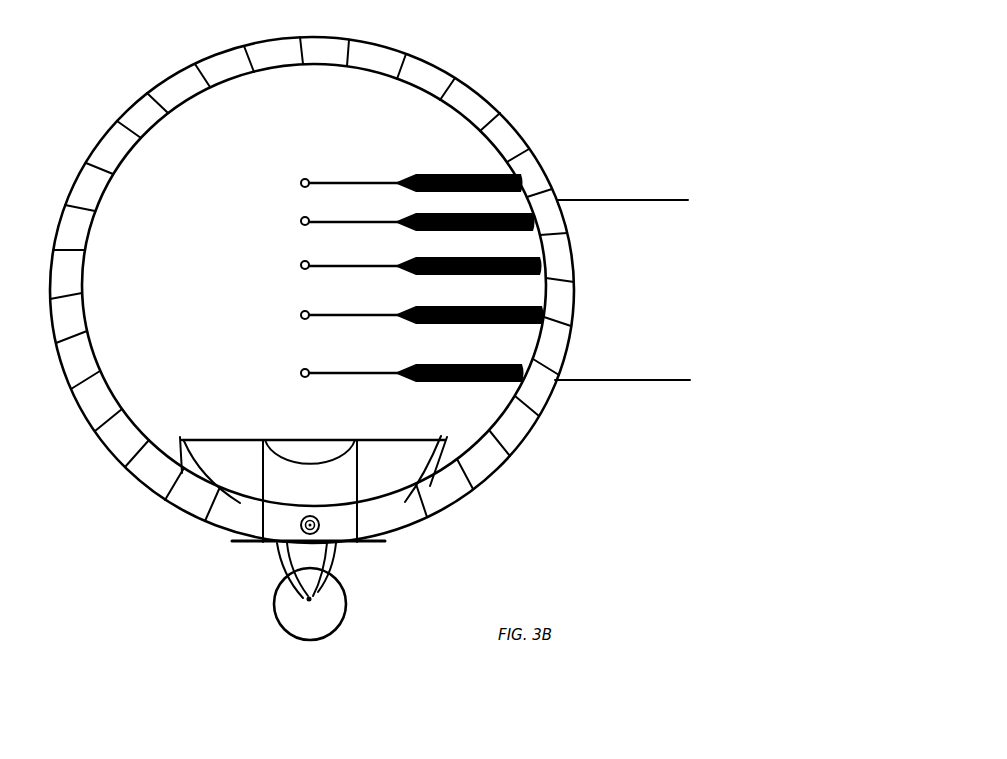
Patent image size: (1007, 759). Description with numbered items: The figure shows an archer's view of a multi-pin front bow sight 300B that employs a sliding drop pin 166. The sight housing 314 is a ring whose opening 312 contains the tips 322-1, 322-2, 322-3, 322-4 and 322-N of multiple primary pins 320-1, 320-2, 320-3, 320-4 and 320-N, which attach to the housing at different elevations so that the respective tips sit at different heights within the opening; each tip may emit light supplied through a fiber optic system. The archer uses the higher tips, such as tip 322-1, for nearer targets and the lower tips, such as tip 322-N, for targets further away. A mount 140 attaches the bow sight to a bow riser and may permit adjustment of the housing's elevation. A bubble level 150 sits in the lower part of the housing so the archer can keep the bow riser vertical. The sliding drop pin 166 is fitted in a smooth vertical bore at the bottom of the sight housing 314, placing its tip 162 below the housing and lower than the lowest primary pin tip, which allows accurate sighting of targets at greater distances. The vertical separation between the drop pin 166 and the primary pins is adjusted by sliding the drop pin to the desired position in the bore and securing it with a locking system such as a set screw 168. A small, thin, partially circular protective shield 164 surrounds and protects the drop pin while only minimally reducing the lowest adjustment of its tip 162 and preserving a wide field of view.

The multi-pin front bow sight 300B is at (133, 50).
The sight housing 314 is at (155, 477).
The opening 312 is at (184, 271).
The adjustable mount 140 is at (639, 299).
The primary pin 320-1 is at (442, 175).
The primary pin 320-2 is at (422, 222).
The primary pin 320-3 is at (425, 266).
The primary pin 320-4 is at (426, 315).
The primary pin 320-N is at (436, 383).
The tip 322-1 is at (300, 183).
The tip 322-2 is at (305, 221).
The tip 322-3 is at (305, 265).
The tip 322-4 is at (305, 315).
The tip 322-N is at (300, 374).
The bubble level 150 is at (322, 495).
The set screw 168 is at (322, 527).
The sliding drop pin 166 is at (284, 567).
The tip 162 is at (306, 600).
The protective shield 164 is at (348, 608).